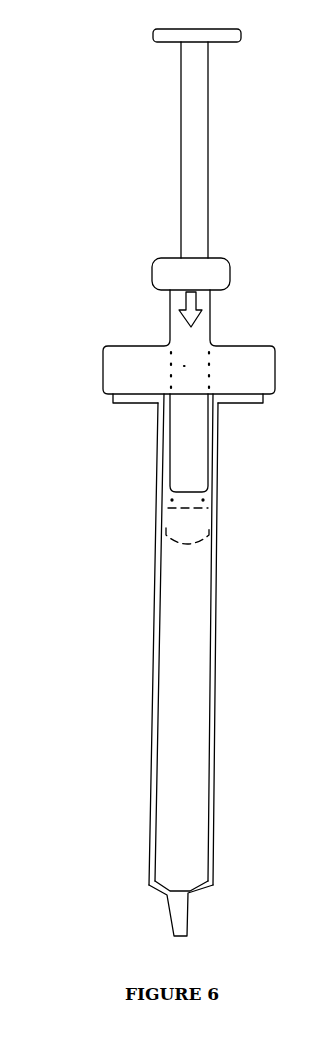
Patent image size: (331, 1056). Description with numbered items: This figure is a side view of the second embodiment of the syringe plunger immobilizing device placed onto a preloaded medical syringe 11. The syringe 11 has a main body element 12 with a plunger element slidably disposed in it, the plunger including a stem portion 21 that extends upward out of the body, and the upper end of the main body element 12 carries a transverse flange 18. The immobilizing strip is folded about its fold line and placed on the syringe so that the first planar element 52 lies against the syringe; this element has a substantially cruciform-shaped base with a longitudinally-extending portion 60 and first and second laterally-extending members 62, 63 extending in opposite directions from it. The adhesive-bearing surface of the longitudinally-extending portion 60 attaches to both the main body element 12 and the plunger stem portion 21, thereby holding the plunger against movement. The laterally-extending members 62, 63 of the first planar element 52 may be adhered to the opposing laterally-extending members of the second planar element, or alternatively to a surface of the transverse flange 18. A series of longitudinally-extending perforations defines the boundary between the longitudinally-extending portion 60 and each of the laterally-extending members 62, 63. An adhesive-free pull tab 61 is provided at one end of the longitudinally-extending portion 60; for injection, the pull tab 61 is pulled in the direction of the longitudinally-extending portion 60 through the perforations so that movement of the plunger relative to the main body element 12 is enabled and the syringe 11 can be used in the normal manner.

The medical syringe 11 is at (141, 590).
The main body element 12 is at (183, 502).
The transverse flange 18 is at (145, 400).
The stem portion 21 is at (192, 223).
The first planar element 52 is at (130, 310).
The longitudinally-extending portion 60 is at (185, 469).
The adhesive-free pull tab 61 is at (167, 270).
The first laterally-extending member 62 is at (132, 362).
The second laterally-extending member 63 is at (238, 374).